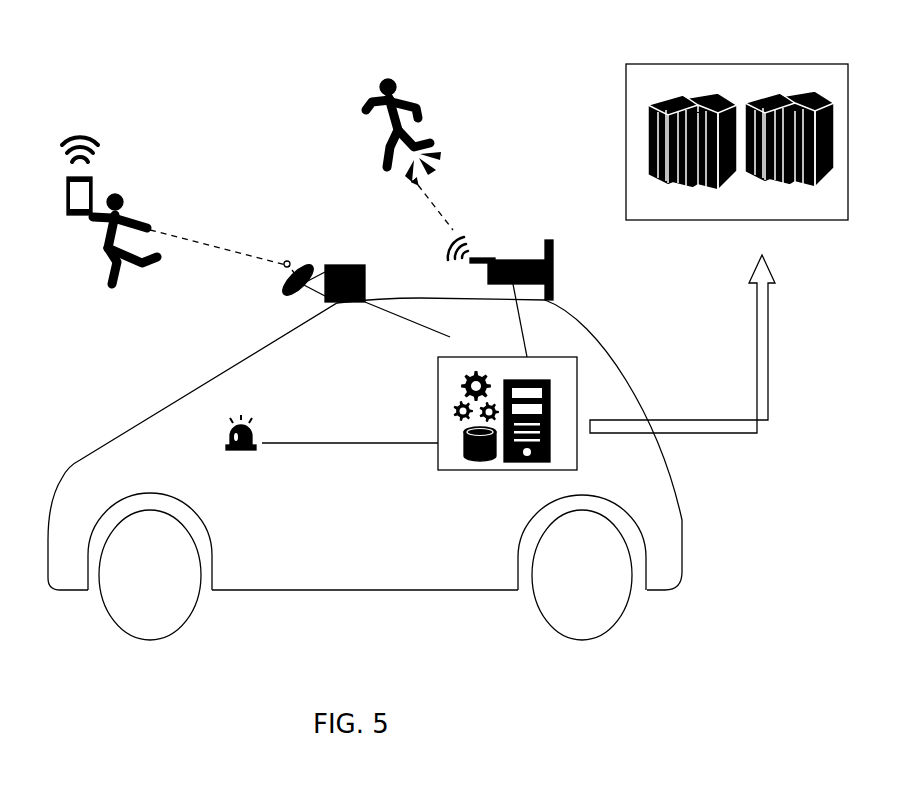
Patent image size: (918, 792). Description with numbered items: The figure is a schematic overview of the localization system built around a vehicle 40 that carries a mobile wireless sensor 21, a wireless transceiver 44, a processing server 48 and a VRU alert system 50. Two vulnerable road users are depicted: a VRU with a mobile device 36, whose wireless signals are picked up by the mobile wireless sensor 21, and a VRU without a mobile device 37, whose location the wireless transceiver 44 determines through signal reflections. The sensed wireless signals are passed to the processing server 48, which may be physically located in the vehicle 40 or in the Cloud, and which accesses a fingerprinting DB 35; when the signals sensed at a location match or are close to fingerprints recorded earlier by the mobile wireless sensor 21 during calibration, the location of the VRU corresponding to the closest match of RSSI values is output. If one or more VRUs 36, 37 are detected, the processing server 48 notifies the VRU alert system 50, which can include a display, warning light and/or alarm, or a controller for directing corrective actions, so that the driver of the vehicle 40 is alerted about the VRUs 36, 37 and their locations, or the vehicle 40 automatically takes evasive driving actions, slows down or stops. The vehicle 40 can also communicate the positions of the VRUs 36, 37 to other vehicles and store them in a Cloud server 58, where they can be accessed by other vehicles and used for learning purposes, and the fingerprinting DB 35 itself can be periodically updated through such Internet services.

The mobile wireless sensor 21 is at (278, 290).
The fingerprinting DB 35 is at (449, 448).
The VRU with mobile device 36 is at (106, 108).
The VRU without mobile device 37 is at (403, 44).
The vehicle 40 is at (247, 353).
The wireless transceiver 44 is at (555, 230).
The processing server 48 is at (519, 421).
The VRU alert system 50 is at (213, 416).
The Cloud server 58 is at (732, 56).